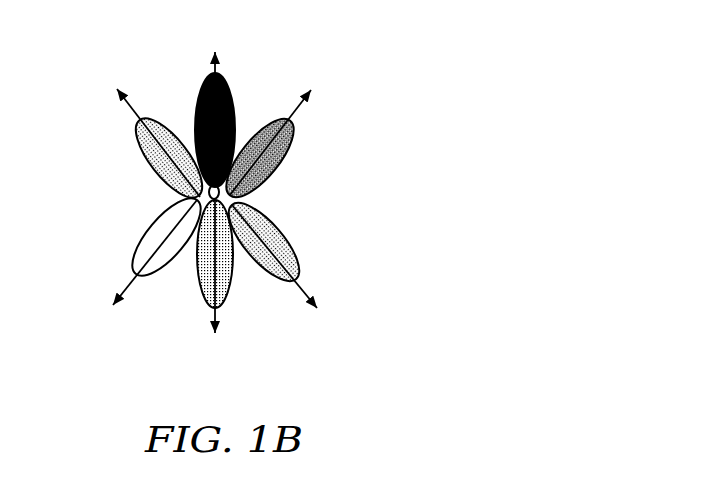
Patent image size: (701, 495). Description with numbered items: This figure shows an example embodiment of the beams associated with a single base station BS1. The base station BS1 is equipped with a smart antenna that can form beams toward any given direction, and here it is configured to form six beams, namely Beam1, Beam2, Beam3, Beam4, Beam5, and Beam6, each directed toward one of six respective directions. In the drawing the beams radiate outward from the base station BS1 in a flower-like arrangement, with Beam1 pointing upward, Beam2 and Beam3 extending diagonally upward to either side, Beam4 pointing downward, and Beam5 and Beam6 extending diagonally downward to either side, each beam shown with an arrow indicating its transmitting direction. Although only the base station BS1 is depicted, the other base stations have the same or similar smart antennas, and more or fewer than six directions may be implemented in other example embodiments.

The first beam Beam1 is at (218, 104).
The second beam Beam2 is at (286, 136).
The third beam Beam3 is at (145, 133).
The fourth beam Beam4 is at (214, 280).
The fifth beam Beam5 is at (290, 264).
The sixth beam Beam6 is at (137, 261).
The base station BS1 is at (450, 70).